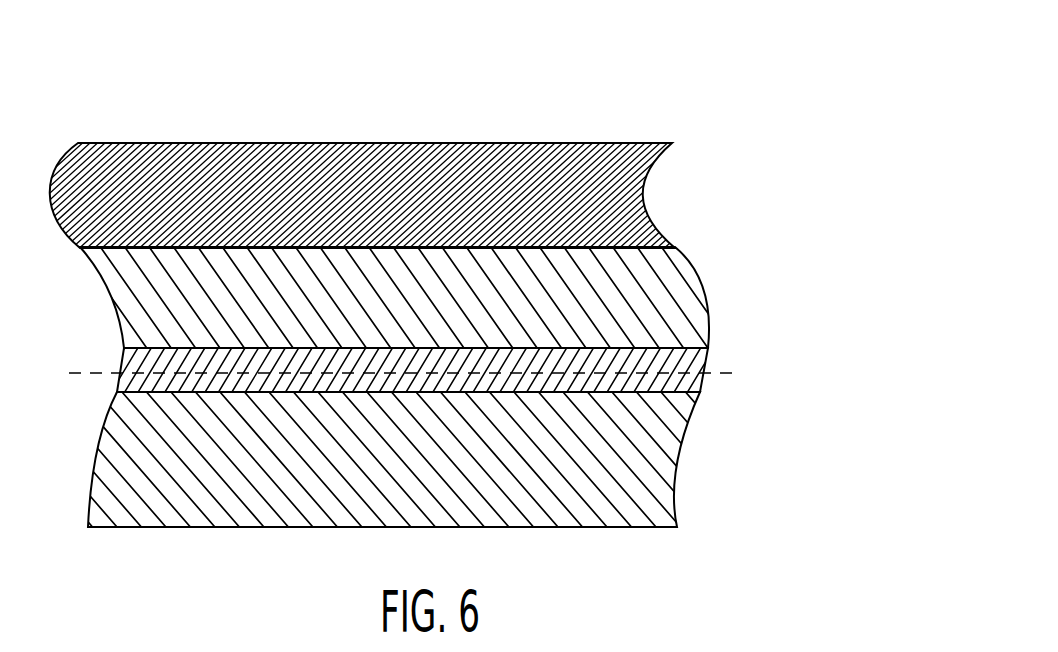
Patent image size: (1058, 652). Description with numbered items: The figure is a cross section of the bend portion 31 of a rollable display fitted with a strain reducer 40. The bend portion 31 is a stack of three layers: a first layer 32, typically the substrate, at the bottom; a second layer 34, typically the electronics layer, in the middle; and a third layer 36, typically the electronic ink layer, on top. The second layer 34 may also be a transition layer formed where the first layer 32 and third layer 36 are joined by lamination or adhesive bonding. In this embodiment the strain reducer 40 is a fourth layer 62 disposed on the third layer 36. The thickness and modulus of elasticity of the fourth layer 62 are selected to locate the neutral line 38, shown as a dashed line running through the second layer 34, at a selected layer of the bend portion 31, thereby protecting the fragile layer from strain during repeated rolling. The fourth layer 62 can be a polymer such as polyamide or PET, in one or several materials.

The bend portion 31 is at (403, 271).
The strain reducer 40 is at (397, 148).
The fourth layer 62 is at (643, 178).
The third layer 36 is at (693, 300).
The second layer 34 is at (702, 358).
The first layer 32 is at (665, 465).
The neutral line 38 is at (73, 373).